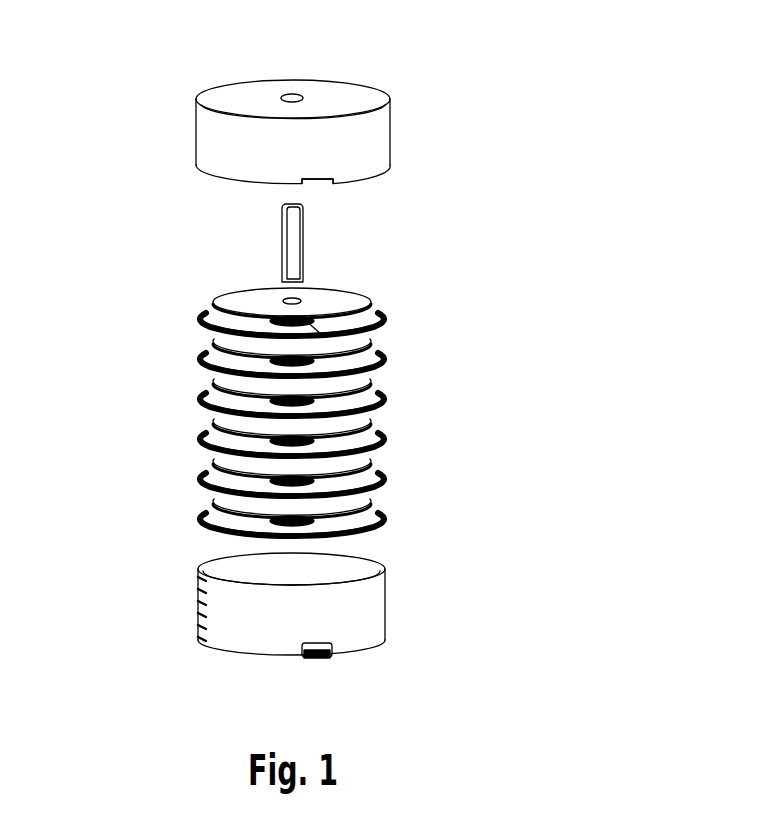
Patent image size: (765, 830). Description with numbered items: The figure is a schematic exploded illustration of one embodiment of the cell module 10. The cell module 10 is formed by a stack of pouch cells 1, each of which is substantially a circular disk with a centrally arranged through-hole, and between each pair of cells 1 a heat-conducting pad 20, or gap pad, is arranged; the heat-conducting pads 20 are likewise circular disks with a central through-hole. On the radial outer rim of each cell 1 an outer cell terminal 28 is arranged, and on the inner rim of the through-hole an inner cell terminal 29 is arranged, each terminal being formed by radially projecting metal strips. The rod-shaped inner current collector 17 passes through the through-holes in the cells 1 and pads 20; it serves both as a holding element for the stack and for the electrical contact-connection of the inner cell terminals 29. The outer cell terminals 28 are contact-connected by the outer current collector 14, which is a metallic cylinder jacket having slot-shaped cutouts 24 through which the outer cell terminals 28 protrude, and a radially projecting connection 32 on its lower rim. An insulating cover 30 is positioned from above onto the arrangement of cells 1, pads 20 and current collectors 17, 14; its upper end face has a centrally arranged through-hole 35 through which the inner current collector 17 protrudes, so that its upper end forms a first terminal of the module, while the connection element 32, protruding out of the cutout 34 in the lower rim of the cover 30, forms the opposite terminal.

The pouch cell 1 is at (193, 372).
The cell module 10 is at (494, 161).
The outer current collector 14 is at (198, 593).
The inner current collector 17 is at (278, 230).
The heat-conducting pad 20 is at (275, 385).
The slot-shaped cutout 24 is at (196, 623).
The outer cell terminal 28 is at (382, 399).
The inner cell terminal 29 is at (372, 340).
The insulating cover 30 is at (367, 79).
The connection element 32 is at (325, 660).
The cutout 34 is at (318, 184).
The through-hole 35 is at (289, 94).